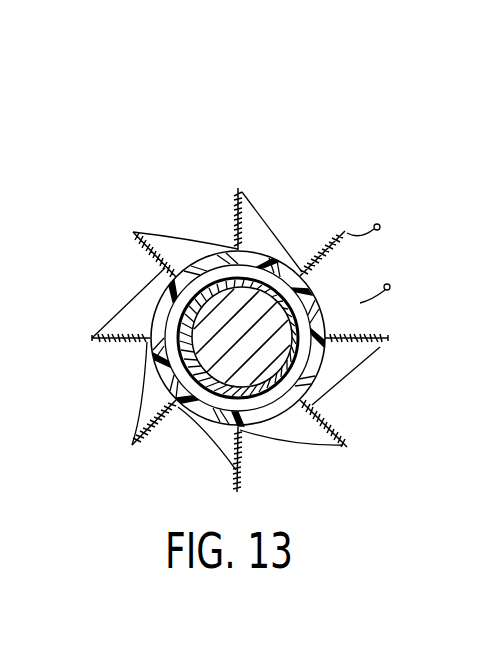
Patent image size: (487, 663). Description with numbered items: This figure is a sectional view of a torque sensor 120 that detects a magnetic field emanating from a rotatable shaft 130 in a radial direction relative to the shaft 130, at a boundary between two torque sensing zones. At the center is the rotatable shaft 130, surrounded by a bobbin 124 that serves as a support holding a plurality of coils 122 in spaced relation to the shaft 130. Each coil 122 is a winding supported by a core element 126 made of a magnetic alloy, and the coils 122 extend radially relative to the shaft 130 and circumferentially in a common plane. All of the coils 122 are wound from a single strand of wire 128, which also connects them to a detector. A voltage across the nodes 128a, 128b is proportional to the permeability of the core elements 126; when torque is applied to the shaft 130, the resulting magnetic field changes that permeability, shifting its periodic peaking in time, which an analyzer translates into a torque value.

The torque sensor 120 is at (167, 121).
The coils 122 is at (226, 212).
The bobbin 124 is at (278, 262).
The core element 126 is at (238, 188).
The single strand of wire 128 is at (330, 345).
The node 128a is at (377, 224).
The node 128b is at (387, 284).
The rotatable shaft 130 is at (268, 313).